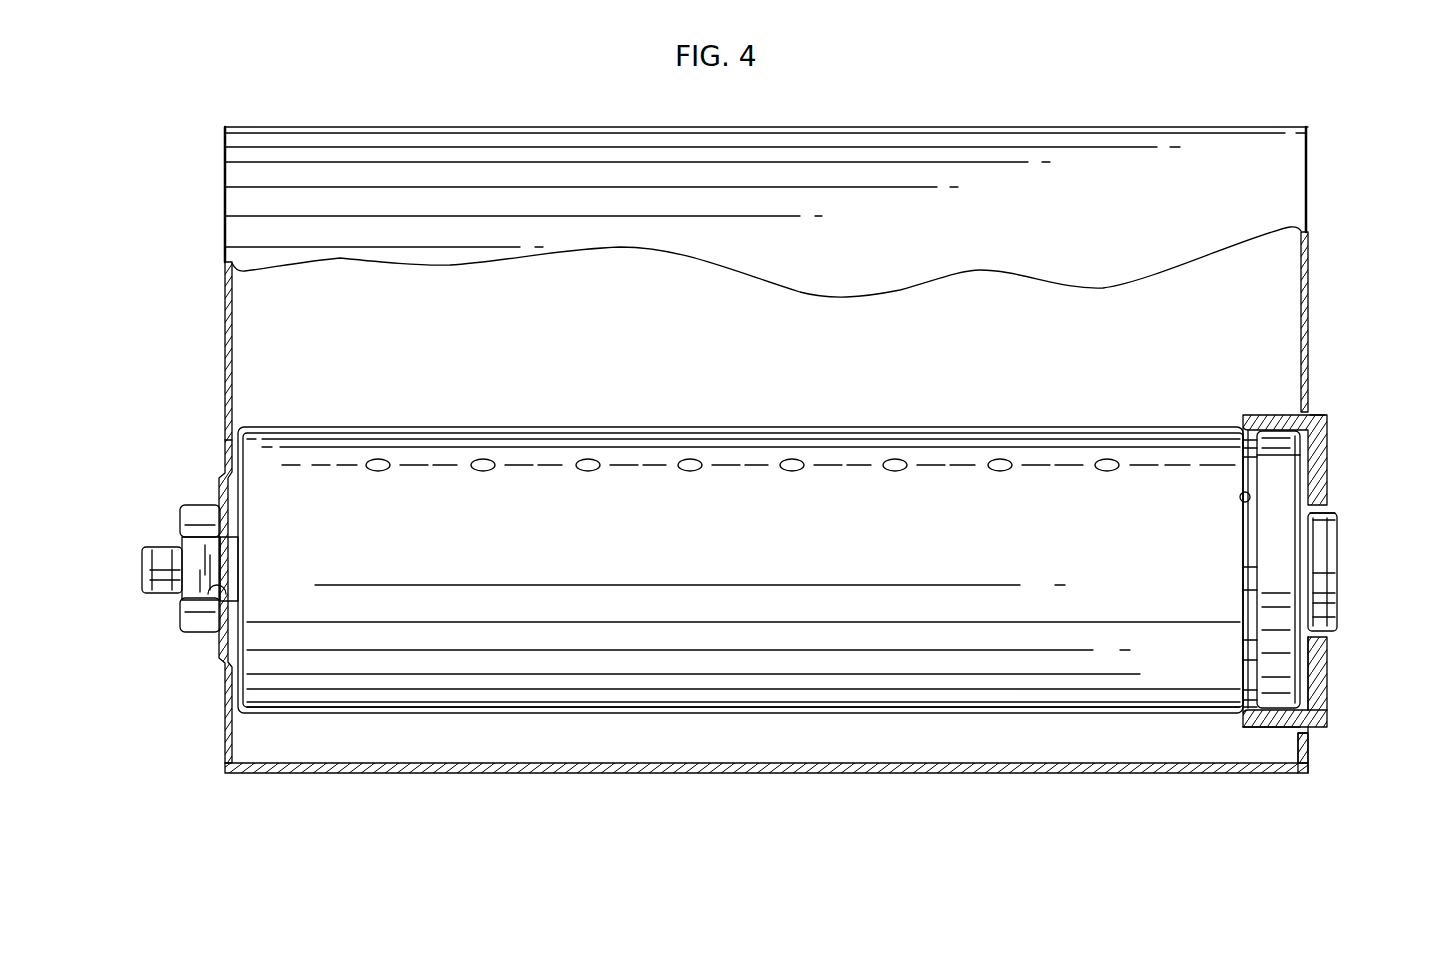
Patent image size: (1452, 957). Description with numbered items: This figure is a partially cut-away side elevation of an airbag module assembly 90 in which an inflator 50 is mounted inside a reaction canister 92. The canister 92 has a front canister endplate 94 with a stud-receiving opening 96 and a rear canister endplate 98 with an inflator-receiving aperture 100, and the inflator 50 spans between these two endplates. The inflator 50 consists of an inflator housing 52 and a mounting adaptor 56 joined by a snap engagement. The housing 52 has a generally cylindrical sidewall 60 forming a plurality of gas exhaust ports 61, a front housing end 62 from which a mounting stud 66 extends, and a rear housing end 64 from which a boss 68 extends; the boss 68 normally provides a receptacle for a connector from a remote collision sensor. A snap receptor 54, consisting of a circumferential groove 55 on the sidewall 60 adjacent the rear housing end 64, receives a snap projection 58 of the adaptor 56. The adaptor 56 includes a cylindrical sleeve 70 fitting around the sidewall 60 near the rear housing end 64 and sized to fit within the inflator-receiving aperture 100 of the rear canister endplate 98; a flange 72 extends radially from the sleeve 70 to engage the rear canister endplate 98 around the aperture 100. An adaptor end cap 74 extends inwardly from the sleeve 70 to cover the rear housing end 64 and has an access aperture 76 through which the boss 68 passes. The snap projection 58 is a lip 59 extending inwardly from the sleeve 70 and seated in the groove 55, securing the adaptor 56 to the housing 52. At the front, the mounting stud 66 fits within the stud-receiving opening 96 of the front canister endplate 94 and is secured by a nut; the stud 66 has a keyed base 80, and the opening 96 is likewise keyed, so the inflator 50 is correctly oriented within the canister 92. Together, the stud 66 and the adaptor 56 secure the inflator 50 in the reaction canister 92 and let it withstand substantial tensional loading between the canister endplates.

The inflator 50 is at (577, 712).
The inflator housing 52 is at (407, 712).
The snap receptor 54 is at (1243, 591).
The circumferential groove 55 is at (1240, 498).
The mounting adaptor 56 is at (1330, 431).
The snap projection 58 is at (1243, 692).
The lip 59 is at (1240, 722).
The cylindrical sidewall 60 is at (547, 427).
The gas exhaust ports 61 is at (483, 472).
The front housing end 62 is at (225, 452).
The rear housing end 64 is at (1310, 664).
The mounting stud 66 is at (142, 576).
The boss 68 is at (1338, 580).
The cylindrical sleeve 70 is at (182, 520).
The flange 72 is at (1320, 410).
The adaptor end cap 74 is at (1310, 455).
The access aperture 76 is at (1333, 524).
The keyed base 80 is at (230, 572).
The airbag module assembly 90 is at (300, 786).
The reaction canister 92 is at (1312, 178).
The front canister endplate 94 is at (225, 365).
The stud-receiving opening 96 is at (217, 600).
The rear canister endplate 98 is at (1308, 290).
The inflator-receiving aperture 100 is at (1314, 700).